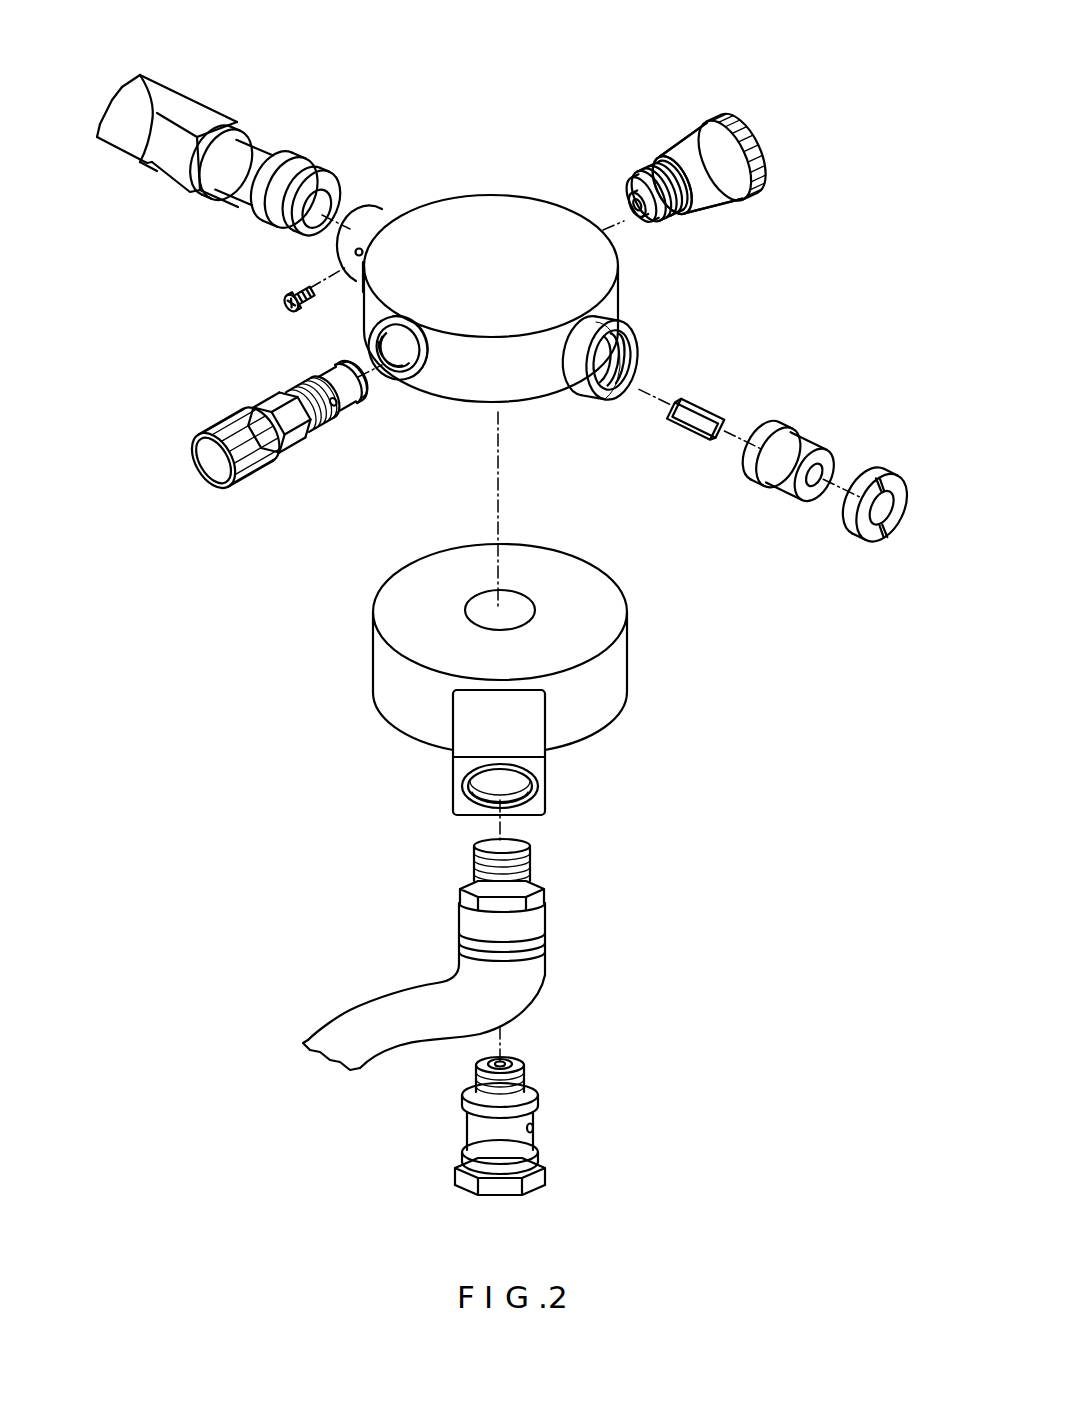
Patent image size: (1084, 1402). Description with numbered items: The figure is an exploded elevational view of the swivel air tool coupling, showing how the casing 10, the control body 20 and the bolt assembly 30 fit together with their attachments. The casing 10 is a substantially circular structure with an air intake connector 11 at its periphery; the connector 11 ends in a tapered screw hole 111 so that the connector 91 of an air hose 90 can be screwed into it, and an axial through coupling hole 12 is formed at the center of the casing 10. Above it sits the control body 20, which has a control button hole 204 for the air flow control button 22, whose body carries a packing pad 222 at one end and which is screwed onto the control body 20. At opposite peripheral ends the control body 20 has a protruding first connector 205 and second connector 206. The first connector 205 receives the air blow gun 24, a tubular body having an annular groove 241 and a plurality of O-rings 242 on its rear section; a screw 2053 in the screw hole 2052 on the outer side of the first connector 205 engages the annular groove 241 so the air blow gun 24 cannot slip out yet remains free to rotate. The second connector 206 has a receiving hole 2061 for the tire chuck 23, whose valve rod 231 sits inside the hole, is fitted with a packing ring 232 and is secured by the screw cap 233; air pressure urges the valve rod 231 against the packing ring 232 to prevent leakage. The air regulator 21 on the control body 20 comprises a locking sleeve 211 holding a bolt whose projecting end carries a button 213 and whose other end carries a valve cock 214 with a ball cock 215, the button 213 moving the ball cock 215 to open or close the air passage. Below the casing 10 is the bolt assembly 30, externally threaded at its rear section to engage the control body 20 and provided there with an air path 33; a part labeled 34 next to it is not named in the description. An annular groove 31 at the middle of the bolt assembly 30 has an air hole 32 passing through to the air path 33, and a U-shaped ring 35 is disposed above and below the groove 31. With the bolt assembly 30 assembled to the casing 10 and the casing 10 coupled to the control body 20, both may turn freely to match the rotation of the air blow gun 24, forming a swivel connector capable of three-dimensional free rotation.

The casing 10 is at (608, 587).
The air intake connector 11 is at (530, 730).
The tapered screw hole 111 is at (523, 797).
The coupling hole 12 is at (512, 608).
The control body 20 is at (497, 210).
The control button hole 204 is at (393, 378).
The first connector 205 is at (377, 217).
The screw hole 2052 is at (347, 257).
The screw 2053 is at (290, 303).
The second connector 206 is at (570, 373).
The receiving hole 2061 is at (625, 333).
The air regulator 21 is at (677, 135).
The locking sleeve 211 is at (708, 153).
The button 213 is at (757, 132).
The valve cock 214 is at (640, 187).
The ball cock 215 is at (627, 212).
The air flow control button 22 is at (268, 463).
The packing pad 222 is at (360, 400).
The tire chuck 23 is at (645, 360).
The valve rod 231 is at (723, 407).
The packing ring 232 is at (805, 447).
The screw cap 233 is at (897, 480).
The air blow gun 24 is at (207, 110).
The annular groove 241 is at (247, 133).
The O-rings 242 is at (275, 157).
The bolt assembly 30 is at (517, 1187).
The annular groove 31 is at (513, 1137).
The air hole 32 is at (532, 1130).
The air path 33 is at (503, 1058).
The threaded stem 34 is at (527, 1073).
The U-shaped ring 35 is at (468, 1153).
The air hose 90 is at (388, 1005).
The connector 91 is at (537, 927).